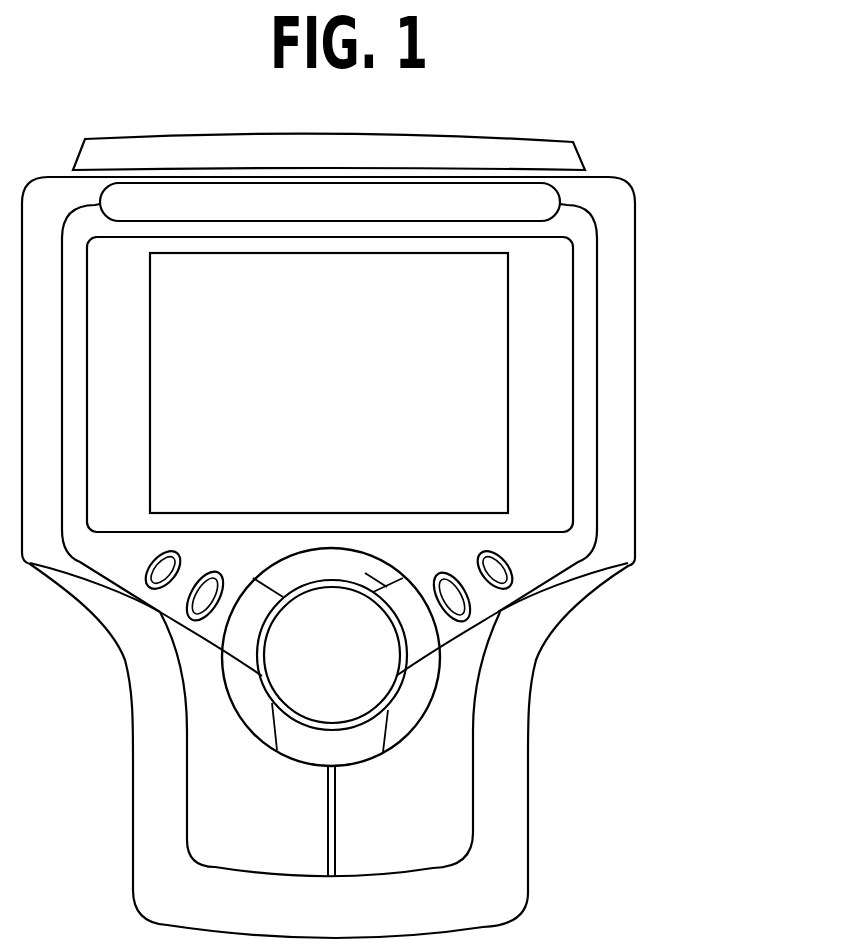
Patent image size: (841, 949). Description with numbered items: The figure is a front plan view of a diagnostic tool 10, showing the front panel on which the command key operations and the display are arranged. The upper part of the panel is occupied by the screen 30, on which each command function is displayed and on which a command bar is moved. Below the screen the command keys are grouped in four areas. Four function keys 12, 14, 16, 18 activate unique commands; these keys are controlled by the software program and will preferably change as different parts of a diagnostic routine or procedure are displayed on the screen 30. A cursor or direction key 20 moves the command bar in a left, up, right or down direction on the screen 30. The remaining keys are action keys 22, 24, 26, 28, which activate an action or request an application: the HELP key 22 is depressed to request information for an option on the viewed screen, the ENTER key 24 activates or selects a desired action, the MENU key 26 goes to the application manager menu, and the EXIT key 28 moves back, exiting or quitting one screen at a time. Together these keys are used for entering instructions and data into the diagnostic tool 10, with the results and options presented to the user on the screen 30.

The diagnostic tool 10 is at (617, 153).
The function key 12 is at (190, 536).
The function key 14 is at (257, 531).
The function key 16 is at (400, 532).
The function key 18 is at (469, 533).
The cursor or direction key 20 is at (340, 670).
The HELP key 22 is at (238, 648).
The ENTER key 24 is at (423, 645).
The MENU key 26 is at (407, 677).
The EXIT key 28 is at (313, 745).
The screen 30 is at (465, 390).